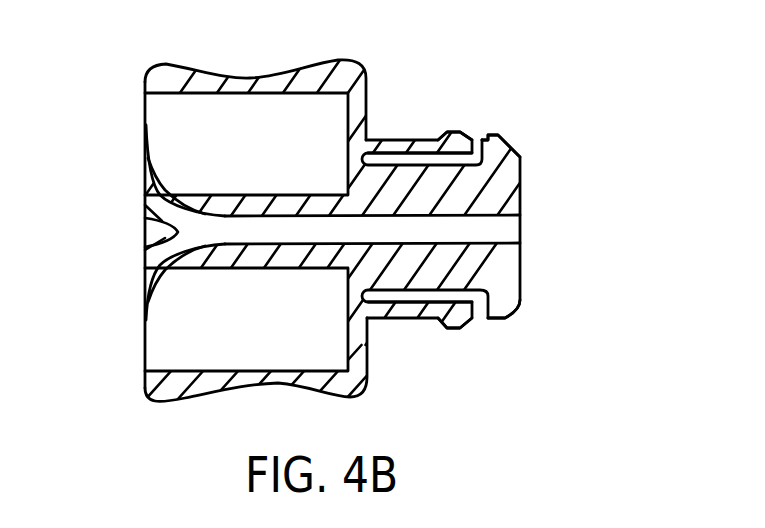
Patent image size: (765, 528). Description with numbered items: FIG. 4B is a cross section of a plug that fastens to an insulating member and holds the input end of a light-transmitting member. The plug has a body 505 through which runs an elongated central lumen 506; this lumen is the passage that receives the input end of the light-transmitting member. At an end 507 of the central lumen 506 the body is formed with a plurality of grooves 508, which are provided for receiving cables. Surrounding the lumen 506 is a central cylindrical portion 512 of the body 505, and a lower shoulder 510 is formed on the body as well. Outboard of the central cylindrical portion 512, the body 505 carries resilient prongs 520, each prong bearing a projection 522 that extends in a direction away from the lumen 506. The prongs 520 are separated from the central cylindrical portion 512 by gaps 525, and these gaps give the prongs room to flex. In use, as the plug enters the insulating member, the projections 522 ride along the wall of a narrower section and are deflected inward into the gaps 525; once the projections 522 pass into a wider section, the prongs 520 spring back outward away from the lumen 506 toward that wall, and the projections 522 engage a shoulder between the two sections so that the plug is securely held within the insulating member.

The body 505 is at (372, 380).
The central lumen 506 is at (505, 222).
The end of the central lumen 507 is at (142, 197).
The grooves 508 is at (160, 211).
The lower shoulder 510 is at (505, 310).
The central cylindrical portion 512 is at (505, 156).
The resilient prongs 520 is at (410, 139).
The projections 522 is at (452, 137).
The gaps 525 is at (403, 162).